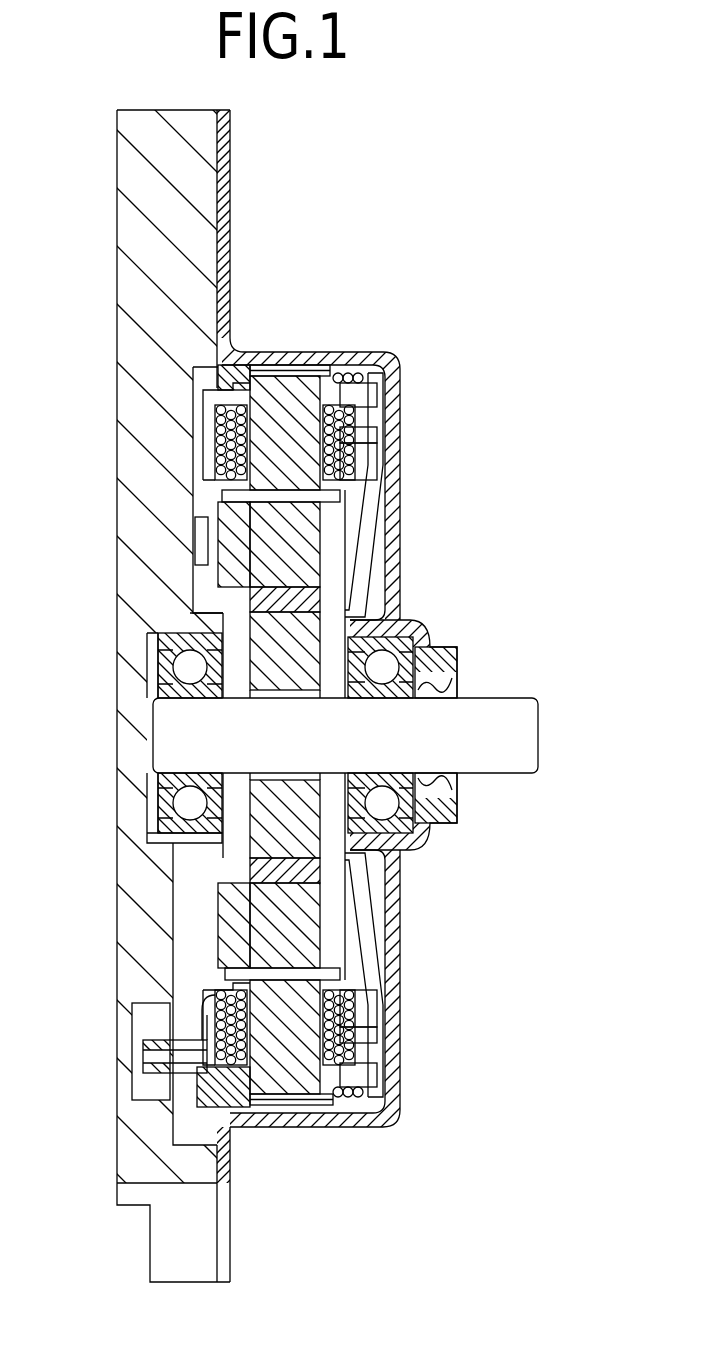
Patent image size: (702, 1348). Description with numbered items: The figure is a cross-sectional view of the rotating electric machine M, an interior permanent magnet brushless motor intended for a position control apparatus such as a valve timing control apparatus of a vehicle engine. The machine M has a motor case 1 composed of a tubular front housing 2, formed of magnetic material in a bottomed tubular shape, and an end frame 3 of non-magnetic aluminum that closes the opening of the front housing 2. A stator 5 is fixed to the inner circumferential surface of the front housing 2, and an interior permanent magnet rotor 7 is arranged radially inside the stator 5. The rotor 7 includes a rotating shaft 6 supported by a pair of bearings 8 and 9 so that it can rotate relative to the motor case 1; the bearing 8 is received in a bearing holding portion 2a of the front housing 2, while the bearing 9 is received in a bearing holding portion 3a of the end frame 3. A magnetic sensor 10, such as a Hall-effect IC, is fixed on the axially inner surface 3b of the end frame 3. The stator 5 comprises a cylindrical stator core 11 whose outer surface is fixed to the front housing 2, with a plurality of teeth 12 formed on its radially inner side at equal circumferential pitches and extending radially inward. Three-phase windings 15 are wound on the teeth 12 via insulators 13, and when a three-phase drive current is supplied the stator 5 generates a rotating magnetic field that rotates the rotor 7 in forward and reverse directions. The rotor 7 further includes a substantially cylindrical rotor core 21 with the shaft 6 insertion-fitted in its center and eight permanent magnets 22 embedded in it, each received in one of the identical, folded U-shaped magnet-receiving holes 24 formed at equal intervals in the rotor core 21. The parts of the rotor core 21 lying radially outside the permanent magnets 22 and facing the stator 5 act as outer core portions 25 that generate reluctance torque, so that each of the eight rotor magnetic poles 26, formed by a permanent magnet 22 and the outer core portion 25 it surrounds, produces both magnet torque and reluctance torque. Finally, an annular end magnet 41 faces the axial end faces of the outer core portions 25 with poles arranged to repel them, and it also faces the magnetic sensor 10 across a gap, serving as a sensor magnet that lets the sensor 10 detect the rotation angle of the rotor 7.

The rotating electric machine M is at (351, 674).
The motor case 1 is at (351, 674).
The tubular front housing 2 is at (222, 1172).
The end frame 3 is at (224, 1190).
The bearing holding portion 2a is at (380, 622).
The bearing holding portion 3a is at (203, 845).
The axially inner surface 3b is at (210, 430).
The stator 5 is at (290, 372).
The rotating shaft 6 is at (525, 745).
The interior permanent magnet rotor 7 is at (351, 674).
The bearing 8 is at (428, 640).
The bearing 9 is at (165, 650).
The magnetic sensor 10 is at (205, 545).
The stator core 11 is at (264, 375).
The teeth 12 is at (350, 470).
The insulators 13 is at (385, 362).
The windings 15 is at (345, 428).
The rotor core 21 is at (283, 680).
The permanent magnets 22 is at (300, 592).
The magnet-receiving holes 24 is at (350, 555).
The outer core portions 25 is at (300, 525).
The rotor magnetic poles 26 is at (235, 520).
The end magnet 41 is at (200, 540).